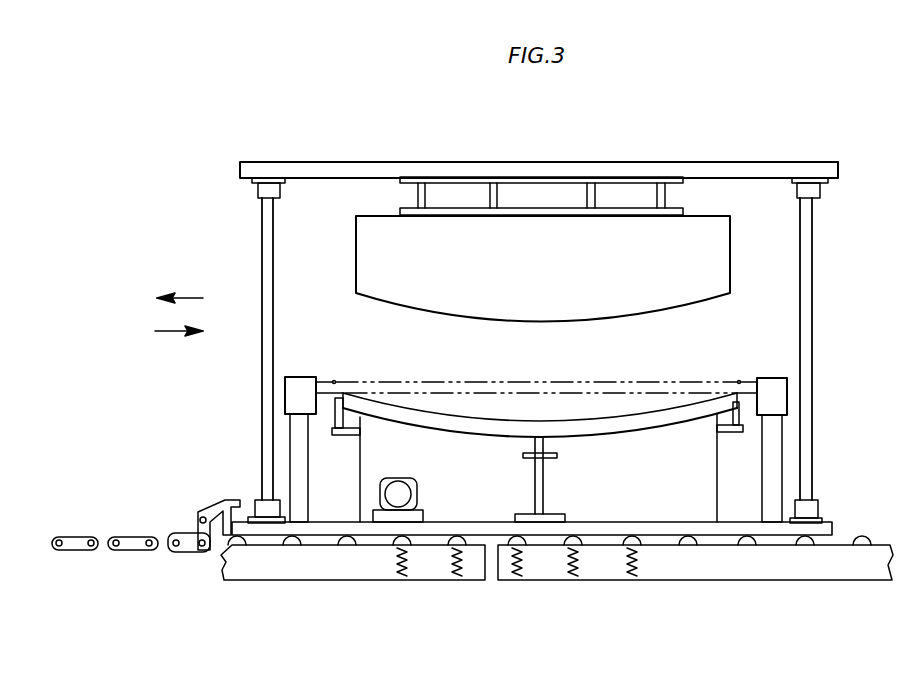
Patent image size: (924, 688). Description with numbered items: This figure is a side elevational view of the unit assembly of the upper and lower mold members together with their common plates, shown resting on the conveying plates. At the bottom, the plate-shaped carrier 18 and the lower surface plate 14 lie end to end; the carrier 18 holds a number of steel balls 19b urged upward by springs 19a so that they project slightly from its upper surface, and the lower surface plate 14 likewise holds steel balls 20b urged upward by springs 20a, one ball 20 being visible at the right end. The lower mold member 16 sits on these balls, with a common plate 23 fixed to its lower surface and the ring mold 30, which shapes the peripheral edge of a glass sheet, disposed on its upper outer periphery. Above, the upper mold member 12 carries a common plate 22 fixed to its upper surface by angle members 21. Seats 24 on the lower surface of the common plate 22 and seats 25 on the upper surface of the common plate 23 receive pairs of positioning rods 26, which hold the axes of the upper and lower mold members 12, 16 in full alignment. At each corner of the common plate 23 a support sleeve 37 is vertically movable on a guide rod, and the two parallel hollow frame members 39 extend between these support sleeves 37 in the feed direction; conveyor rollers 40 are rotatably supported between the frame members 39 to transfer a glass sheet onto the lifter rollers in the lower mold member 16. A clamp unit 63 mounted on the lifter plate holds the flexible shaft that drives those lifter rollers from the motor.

The upper mold member 12 is at (713, 256).
The lower surface plate 14 is at (787, 568).
The lower mold member 16 is at (453, 507).
The carrier 18 is at (236, 572).
The springs 19a is at (397, 565).
The steel balls 19b is at (346, 546).
The roller 20 is at (862, 540).
The springs 20a is at (520, 560).
The steel balls 20b is at (648, 534).
The angle members 21 is at (412, 198).
The common plate 22 is at (555, 170).
The common plate 23 is at (720, 530).
The seats 24 is at (258, 191).
The seats 25 is at (252, 503).
The positioning rods 26 is at (265, 235).
The ring mold 30 is at (478, 415).
The support sleeve 37 is at (295, 427).
The hollow frame members 39 is at (305, 388).
The conveyor rollers 40 is at (378, 385).
The clamp unit 63 is at (400, 492).